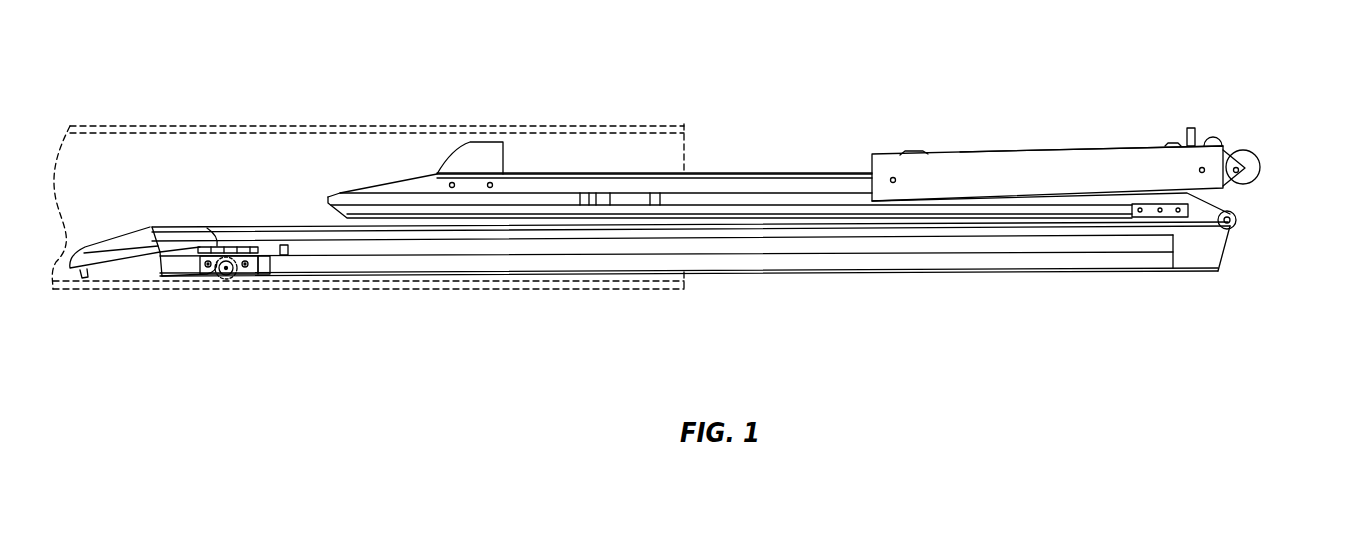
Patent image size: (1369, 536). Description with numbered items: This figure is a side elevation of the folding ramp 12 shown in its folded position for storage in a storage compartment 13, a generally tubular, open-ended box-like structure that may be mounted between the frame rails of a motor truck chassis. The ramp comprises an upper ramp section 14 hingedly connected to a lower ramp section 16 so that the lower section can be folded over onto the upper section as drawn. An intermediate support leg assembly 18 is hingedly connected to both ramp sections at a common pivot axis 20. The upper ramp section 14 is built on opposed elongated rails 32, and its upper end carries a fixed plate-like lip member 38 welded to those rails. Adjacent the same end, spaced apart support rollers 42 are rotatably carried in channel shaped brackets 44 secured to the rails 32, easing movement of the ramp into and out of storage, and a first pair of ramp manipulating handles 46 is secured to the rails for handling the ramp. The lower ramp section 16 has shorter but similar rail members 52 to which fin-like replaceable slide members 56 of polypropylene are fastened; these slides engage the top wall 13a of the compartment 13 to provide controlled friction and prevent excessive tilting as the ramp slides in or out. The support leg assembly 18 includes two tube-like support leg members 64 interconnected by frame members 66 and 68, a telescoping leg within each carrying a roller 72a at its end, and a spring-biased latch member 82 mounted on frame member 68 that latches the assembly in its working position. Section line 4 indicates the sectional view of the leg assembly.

The section line 4- 4 is at (1355, 316).
The folding ramp 12 is at (289, 164).
The storage compartment 13 is at (355, 122).
The top wall 13a is at (98, 127).
The upper ramp section 14 is at (287, 224).
The lower ramp section 16 is at (660, 172).
The intermediate support leg assembly 18 is at (990, 149).
The common pivot axis 20 is at (1240, 222).
The rails 32 is at (770, 272).
The lip member 38 is at (110, 255).
The support rollers 42 is at (235, 277).
The channel shaped brackets 44 is at (245, 272).
The ramp manipulating handles 46 is at (285, 252).
The rail members 52 is at (737, 172).
The slide members 56 is at (485, 152).
The support leg members 64 is at (1067, 150).
The frame member 66 is at (910, 152).
The frame member 68 is at (1178, 145).
The roller 72a is at (1260, 168).
The latch member 82 is at (1210, 145).